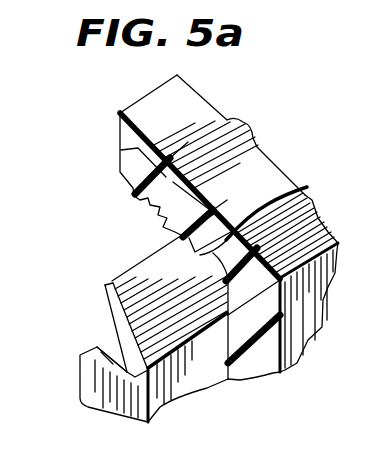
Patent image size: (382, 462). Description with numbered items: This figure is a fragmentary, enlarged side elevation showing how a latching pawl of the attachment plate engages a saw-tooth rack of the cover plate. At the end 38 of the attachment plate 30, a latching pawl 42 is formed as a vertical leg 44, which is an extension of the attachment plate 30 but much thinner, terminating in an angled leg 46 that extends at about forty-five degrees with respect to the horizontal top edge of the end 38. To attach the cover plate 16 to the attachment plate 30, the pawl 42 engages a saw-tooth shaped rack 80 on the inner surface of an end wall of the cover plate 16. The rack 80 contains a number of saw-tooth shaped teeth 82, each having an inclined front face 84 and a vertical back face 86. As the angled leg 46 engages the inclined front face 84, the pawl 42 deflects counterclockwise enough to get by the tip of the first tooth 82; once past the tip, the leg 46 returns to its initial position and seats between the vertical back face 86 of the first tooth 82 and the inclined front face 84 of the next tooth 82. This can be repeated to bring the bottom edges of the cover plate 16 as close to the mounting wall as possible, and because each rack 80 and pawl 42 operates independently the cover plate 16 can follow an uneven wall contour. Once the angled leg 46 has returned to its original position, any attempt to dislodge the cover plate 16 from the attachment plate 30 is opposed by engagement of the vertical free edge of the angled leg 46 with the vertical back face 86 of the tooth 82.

The cover plate 16 is at (247, 146).
The vertical back face 86 is at (290, 195).
The inclined front face 84 is at (137, 198).
The saw-tooth shaped rack 80 is at (141, 213).
The saw-tooth shaped tooth 82 is at (158, 226).
The attachment plate 30 is at (80, 377).
The latching pawl 42 is at (105, 299).
The angled leg 46 is at (112, 277).
The end of attachment plate 38 is at (113, 367).
The vertical leg 44 is at (190, 378).